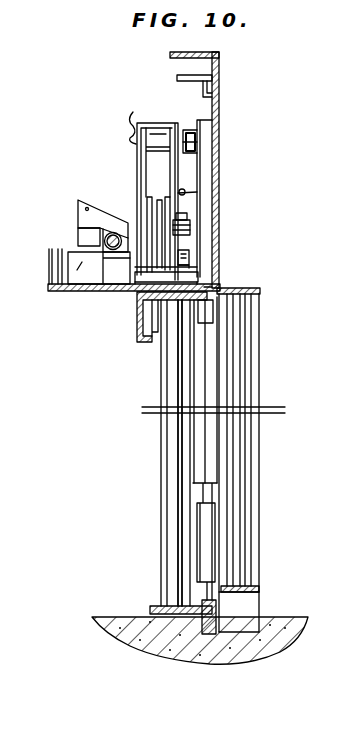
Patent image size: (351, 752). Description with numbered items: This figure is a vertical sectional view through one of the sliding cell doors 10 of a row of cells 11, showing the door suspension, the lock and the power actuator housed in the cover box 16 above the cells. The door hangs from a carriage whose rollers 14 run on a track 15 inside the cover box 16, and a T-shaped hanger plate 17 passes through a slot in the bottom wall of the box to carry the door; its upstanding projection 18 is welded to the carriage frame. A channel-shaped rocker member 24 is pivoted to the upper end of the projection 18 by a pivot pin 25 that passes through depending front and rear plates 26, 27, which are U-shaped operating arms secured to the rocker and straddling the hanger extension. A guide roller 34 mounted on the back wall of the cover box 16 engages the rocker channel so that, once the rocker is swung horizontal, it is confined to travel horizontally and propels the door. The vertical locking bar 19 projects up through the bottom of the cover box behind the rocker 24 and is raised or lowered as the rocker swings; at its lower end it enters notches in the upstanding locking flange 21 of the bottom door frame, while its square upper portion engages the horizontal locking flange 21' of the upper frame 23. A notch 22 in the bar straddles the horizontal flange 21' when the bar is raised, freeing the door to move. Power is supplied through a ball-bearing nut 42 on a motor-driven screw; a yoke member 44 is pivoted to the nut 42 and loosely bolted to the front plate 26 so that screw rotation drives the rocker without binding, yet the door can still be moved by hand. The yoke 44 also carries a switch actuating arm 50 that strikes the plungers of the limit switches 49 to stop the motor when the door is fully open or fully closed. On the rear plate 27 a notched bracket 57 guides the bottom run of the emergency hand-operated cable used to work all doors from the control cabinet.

The cell door 10 is at (170, 382).
The cell 11 is at (243, 372).
The roller 14 is at (191, 214).
The track 15 is at (163, 282).
The cover box 16 is at (219, 53).
The hanger plate 17 is at (138, 316).
The upstanding projection 18 is at (142, 187).
The locking bar 19 is at (205, 533).
The upstanding locking flange 21 is at (162, 599).
The horizontal locking flange 21' is at (147, 453).
The notch 22 is at (206, 302).
The upper frame 23 is at (145, 330).
The rocker member 24 is at (188, 128).
The pivot pin 25 is at (135, 110).
The front plate 26 is at (134, 163).
The rear plate 27 is at (200, 186).
The roller 34 is at (197, 145).
The ball-bearing nut 42 is at (97, 248).
The yoke member 44 is at (108, 280).
The limit switch 49 is at (80, 207).
The switch actuating arm 50 is at (92, 221).
The notched bracket 57 is at (188, 260).